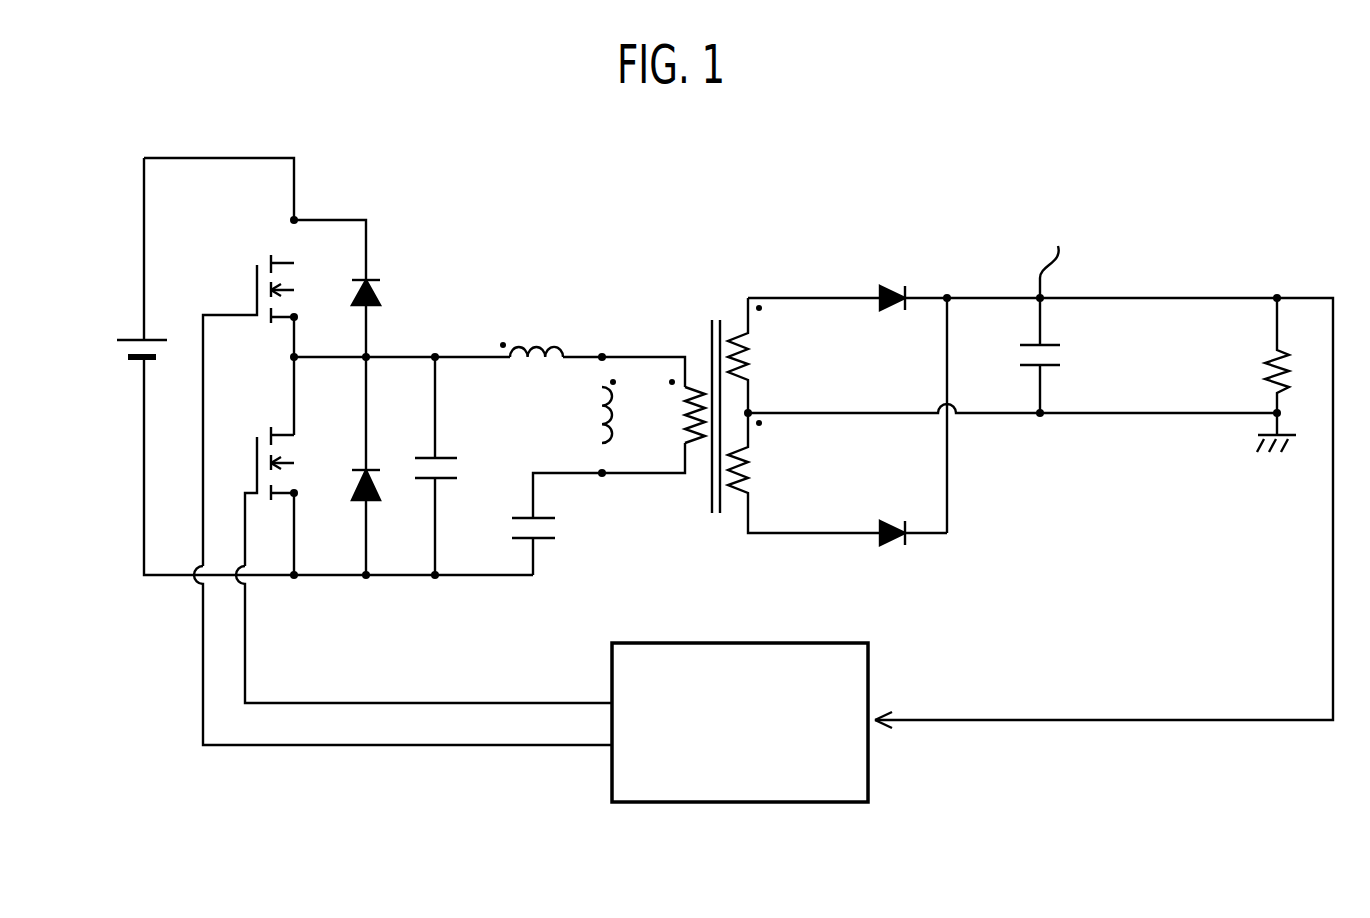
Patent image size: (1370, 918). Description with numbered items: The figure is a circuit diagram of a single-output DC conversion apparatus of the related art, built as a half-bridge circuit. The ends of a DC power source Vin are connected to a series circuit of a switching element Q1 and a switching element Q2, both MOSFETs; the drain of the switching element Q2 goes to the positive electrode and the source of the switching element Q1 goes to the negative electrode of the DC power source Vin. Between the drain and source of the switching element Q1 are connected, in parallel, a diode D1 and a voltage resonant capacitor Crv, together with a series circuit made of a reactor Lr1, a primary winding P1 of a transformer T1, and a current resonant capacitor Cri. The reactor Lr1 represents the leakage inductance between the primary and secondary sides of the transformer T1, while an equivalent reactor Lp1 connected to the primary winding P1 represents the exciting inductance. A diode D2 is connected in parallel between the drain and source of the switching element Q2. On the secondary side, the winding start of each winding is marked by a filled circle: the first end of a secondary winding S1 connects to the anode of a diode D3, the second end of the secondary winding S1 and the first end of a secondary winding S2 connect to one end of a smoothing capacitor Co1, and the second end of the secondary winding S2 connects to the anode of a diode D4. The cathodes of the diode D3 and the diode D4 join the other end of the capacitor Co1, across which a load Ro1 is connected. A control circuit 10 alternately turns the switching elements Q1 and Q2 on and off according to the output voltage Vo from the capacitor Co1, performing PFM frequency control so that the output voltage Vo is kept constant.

The DC power source Vin is at (154, 331).
The switching element Q1 is at (421, 549).
The switching element Q2 is at (403, 485).
The diode D1 is at (379, 502).
The diode D2 is at (379, 273).
The voltage resonant capacitor Crv is at (461, 470).
The reactor Lr1 is at (536, 330).
The equivalent reactor Lp1 is at (583, 415).
The primary winding P1 is at (677, 415).
The current resonant capacitor Cri is at (555, 530).
The transformer T1 is at (716, 396).
The secondary winding S1 is at (755, 355).
The secondary winding S2 is at (804, 473).
The diode D3 is at (847, 280).
The diode D4 is at (912, 513).
The output voltage Vo is at (1057, 252).
The smoothing capacitor Co1 is at (1068, 355).
The load Ro1 is at (1251, 375).
The control circuit 10 is at (868, 760).